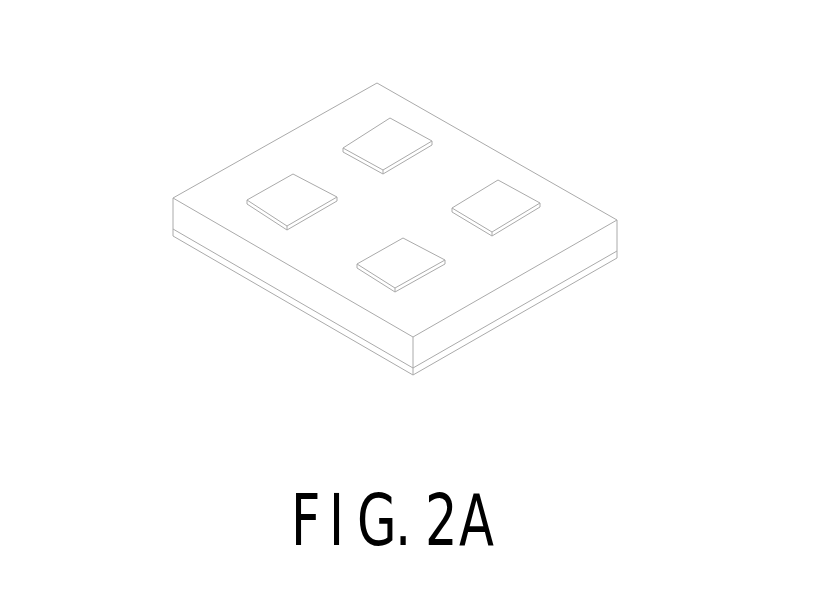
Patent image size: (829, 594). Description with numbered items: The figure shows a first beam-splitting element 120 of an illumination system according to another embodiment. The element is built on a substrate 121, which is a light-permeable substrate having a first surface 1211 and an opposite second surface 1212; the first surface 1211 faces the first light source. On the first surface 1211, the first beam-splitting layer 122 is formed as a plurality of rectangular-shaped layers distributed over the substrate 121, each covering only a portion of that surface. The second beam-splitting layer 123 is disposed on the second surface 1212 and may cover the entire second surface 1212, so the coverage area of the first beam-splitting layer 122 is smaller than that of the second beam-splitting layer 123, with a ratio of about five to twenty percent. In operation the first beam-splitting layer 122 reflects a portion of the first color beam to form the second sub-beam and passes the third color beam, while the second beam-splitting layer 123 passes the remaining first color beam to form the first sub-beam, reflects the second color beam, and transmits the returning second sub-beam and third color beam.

The first beam-splitting element 120 is at (382, 199).
The substrate 121 is at (380, 222).
The first surface 1211 is at (222, 195).
The second surface 1212 is at (186, 235).
The first beam-splitting layer 122 is at (402, 142).
The second beam-splitting layer 123 is at (617, 254).